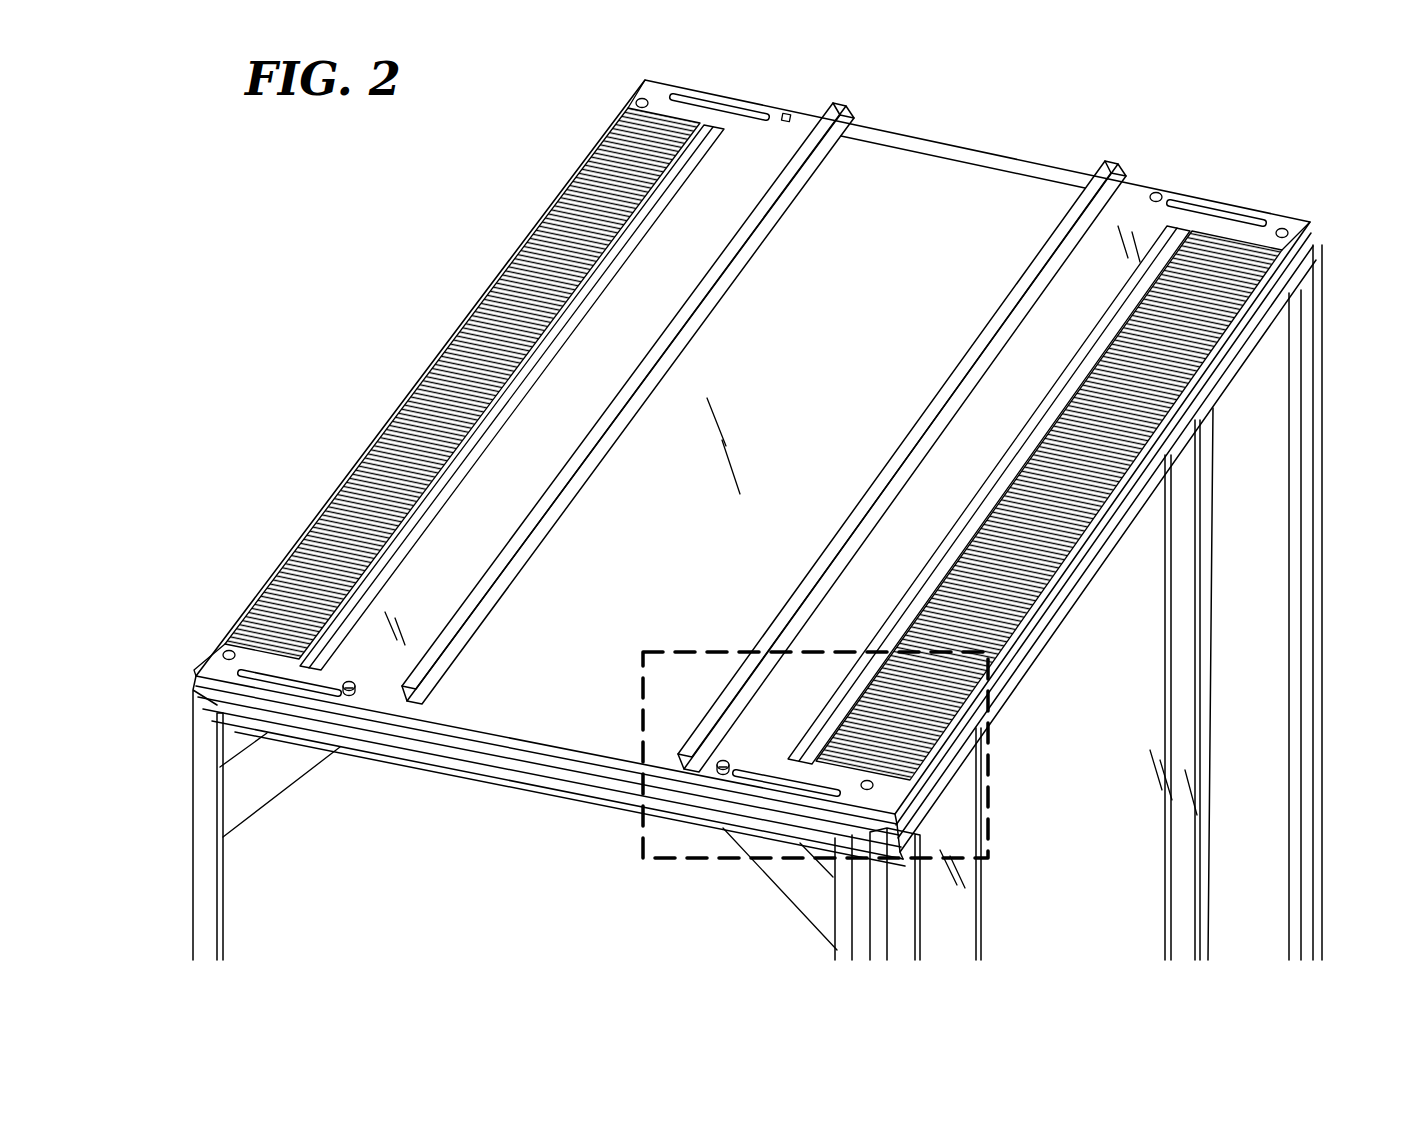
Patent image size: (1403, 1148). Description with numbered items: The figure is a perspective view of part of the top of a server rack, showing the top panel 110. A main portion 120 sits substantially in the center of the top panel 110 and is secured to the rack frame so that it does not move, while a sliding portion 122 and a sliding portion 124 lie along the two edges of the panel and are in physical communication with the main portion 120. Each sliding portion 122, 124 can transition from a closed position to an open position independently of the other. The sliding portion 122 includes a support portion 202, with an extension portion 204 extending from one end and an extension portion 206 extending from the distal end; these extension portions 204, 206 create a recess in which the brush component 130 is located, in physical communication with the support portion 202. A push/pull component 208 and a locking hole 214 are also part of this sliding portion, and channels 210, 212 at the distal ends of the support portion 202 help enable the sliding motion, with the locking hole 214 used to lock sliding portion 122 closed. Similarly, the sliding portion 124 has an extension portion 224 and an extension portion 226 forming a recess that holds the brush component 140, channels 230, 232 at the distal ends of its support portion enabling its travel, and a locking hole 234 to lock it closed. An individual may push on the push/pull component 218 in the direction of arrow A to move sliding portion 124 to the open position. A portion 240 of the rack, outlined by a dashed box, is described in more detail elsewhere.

The top panel 110 is at (986, 142).
The main portion 120 is at (957, 172).
The sliding portion 122 is at (760, 165).
The sliding portion 124 is at (1144, 181).
The brush component 130 is at (368, 452).
The brush component 140 is at (1178, 360).
The support portion 202 is at (360, 668).
The extension portion 204 is at (210, 664).
The extension portion 206 is at (658, 96).
The push/pull component 208 is at (405, 685).
The channel 210 is at (279, 680).
The channel 212 is at (722, 104).
The locking hole 214 is at (792, 113).
The push/pull component 218 is at (645, 812).
The extension portion 224 is at (850, 797).
The extension portion 226 is at (1290, 224).
The channel 230 is at (800, 788).
The channel 232 is at (1224, 206).
The locking hole 234 is at (1162, 192).
The portion 240 is at (660, 858).